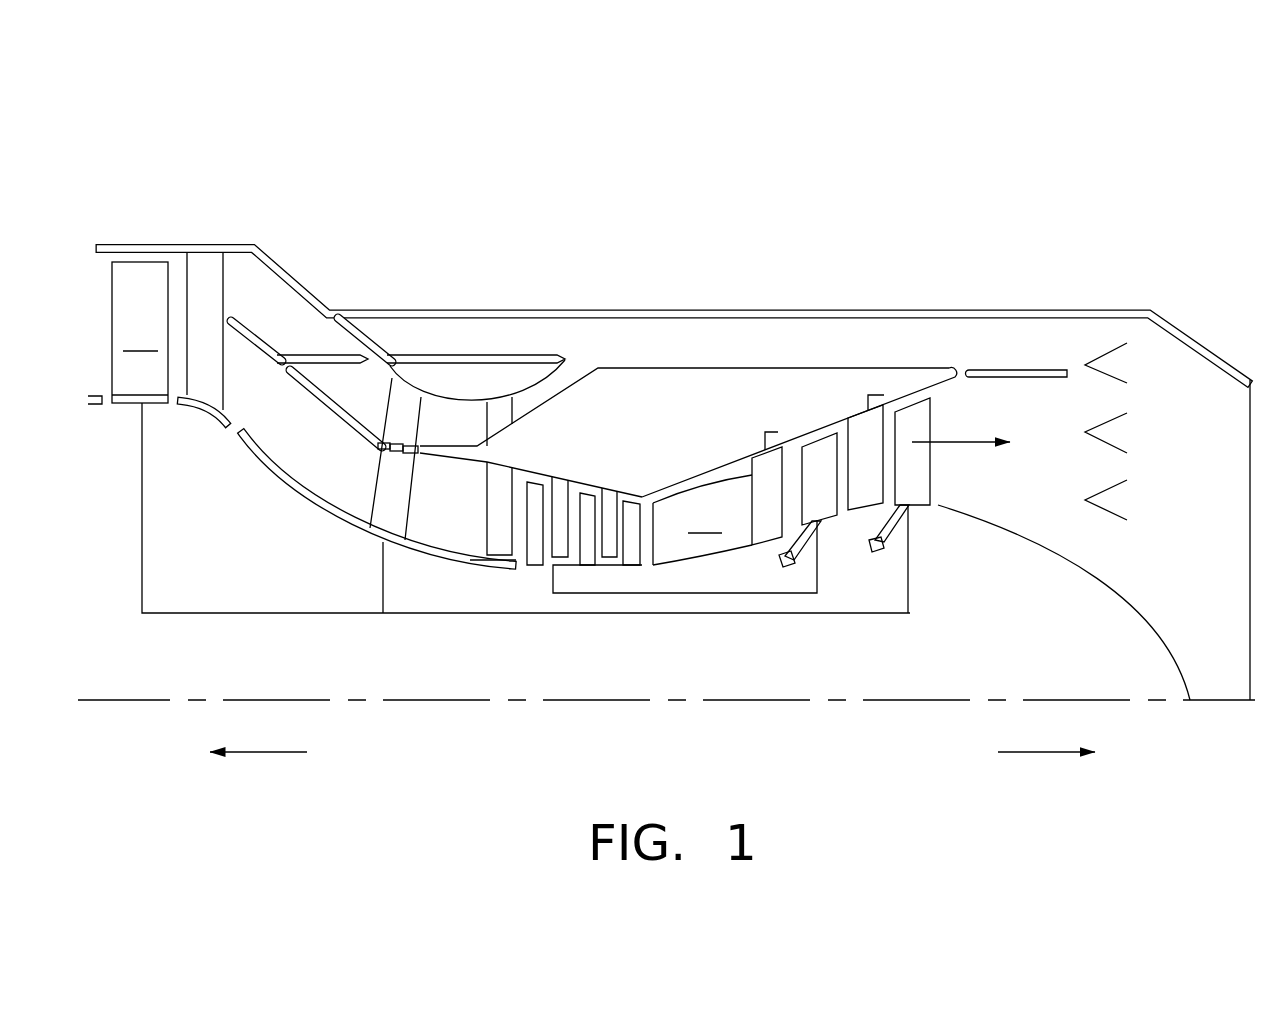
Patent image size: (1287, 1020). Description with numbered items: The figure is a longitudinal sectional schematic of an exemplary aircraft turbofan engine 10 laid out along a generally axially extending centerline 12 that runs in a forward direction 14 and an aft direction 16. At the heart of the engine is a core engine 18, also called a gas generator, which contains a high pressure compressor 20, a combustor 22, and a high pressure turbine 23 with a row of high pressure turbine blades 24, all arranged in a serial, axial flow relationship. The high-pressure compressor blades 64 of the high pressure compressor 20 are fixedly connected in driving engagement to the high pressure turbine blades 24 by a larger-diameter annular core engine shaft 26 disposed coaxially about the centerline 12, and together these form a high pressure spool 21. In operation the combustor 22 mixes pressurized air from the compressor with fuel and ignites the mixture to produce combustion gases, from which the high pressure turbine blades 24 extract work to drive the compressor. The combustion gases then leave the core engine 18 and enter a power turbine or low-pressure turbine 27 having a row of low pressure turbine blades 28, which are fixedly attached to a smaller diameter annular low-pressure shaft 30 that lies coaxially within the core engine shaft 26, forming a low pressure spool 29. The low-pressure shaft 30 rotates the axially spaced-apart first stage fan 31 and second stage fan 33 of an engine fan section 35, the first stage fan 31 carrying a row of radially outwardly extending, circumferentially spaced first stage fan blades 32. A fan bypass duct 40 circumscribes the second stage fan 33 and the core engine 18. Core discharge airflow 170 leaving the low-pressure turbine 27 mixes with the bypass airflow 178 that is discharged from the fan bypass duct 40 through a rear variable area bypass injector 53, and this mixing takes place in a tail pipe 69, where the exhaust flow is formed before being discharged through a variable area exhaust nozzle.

The turbofan engine 10 is at (628, 290).
The centerline 12 is at (1047, 700).
The forward direction 14 is at (255, 752).
The aft direction 16 is at (1045, 752).
The core engine 18 is at (685, 470).
The high pressure compressor 20 is at (569, 492).
The high pressure spool 21 is at (655, 603).
The combustor 22 is at (702, 520).
The high pressure turbine 23 is at (777, 545).
The high pressure turbine blades 24 is at (823, 453).
The core engine shaft 26 is at (580, 593).
The low-pressure turbine 27 is at (862, 532).
The low pressure turbine blades 28 is at (922, 485).
The low pressure spool 29 is at (463, 650).
The low-pressure shaft 30 is at (743, 613).
The first stage fan 31 is at (125, 197).
The first stage fan blades 32 is at (155, 331).
The second stage fan 33 is at (412, 372).
The engine fan section 35 is at (340, 287).
The fan bypass duct 40 is at (805, 348).
The rear variable area bypass injector 53 is at (998, 368).
The high-pressure compressor blades 64 is at (590, 497).
The tail pipe 69 is at (968, 309).
The core discharge airflow 170 is at (962, 442).
The bypass airflow 178 is at (855, 340).